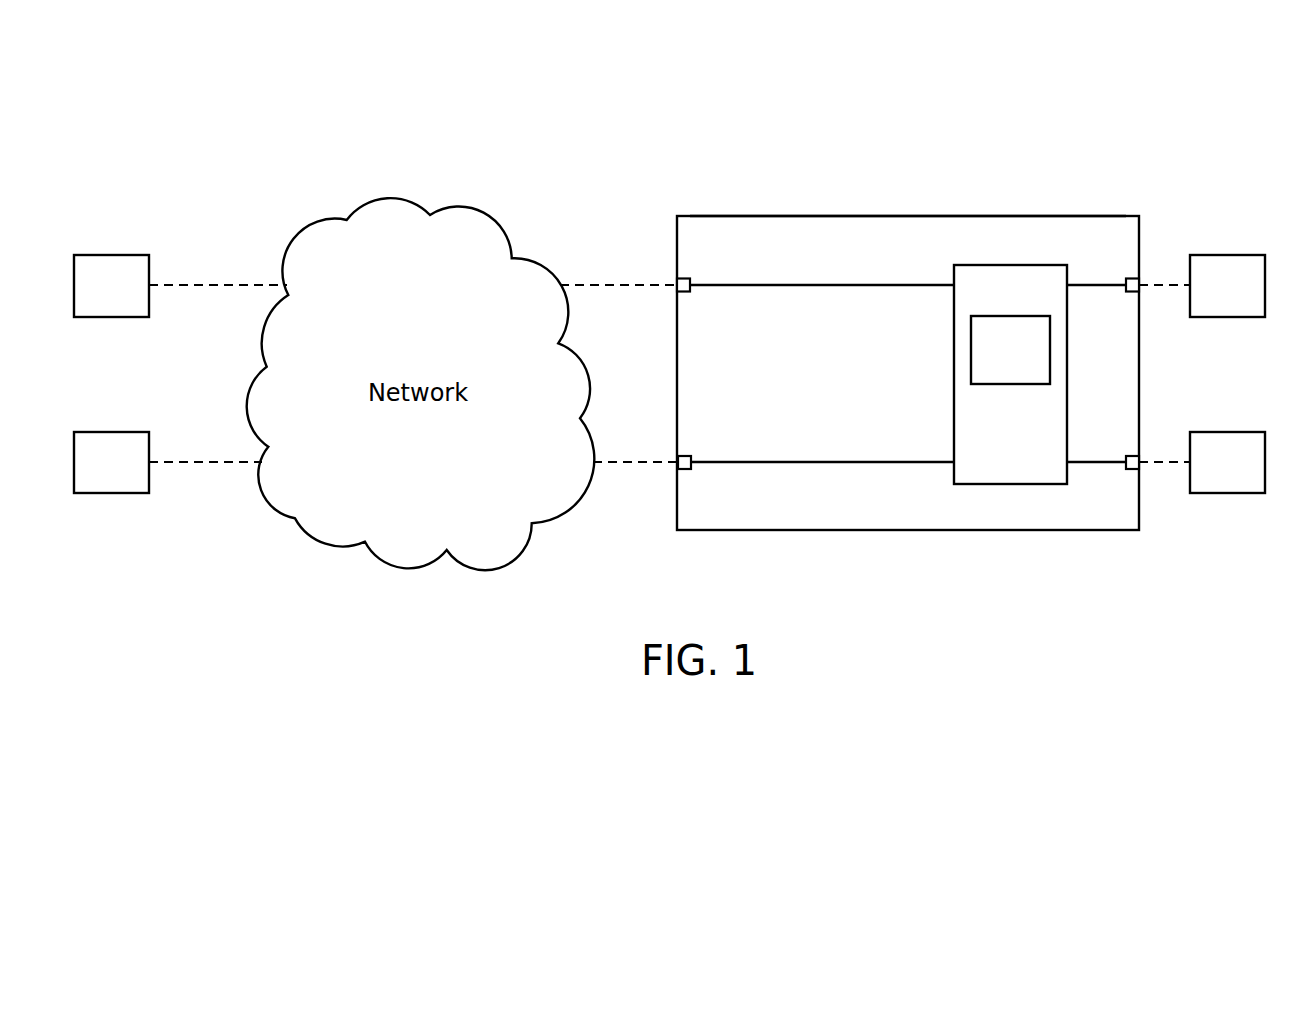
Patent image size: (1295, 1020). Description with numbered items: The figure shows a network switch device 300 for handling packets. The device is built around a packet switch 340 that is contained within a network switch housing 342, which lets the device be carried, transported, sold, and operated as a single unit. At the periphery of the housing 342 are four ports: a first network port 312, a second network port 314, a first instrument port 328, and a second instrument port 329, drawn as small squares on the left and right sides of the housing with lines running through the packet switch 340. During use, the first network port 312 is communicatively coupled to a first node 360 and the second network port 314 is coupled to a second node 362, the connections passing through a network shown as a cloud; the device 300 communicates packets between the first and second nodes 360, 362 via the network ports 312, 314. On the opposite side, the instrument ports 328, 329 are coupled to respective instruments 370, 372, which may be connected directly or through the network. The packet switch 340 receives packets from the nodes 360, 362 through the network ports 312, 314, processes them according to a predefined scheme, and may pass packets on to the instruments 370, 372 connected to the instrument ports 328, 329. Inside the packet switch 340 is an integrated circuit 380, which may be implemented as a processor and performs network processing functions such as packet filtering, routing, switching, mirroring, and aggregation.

The network switch device 300 is at (878, 86).
The first network port 312 is at (683, 277).
The second network port 314 is at (683, 470).
The first instrument port 328 is at (1133, 278).
The second instrument port 329 is at (1133, 470).
The packet switch 340 is at (1014, 484).
The network switch housing 342 is at (905, 216).
The first node 360 is at (113, 255).
The second node 362 is at (115, 493).
The instrument 370 is at (1228, 255).
The instrument 372 is at (1235, 494).
The integrated circuit 380 is at (989, 364).